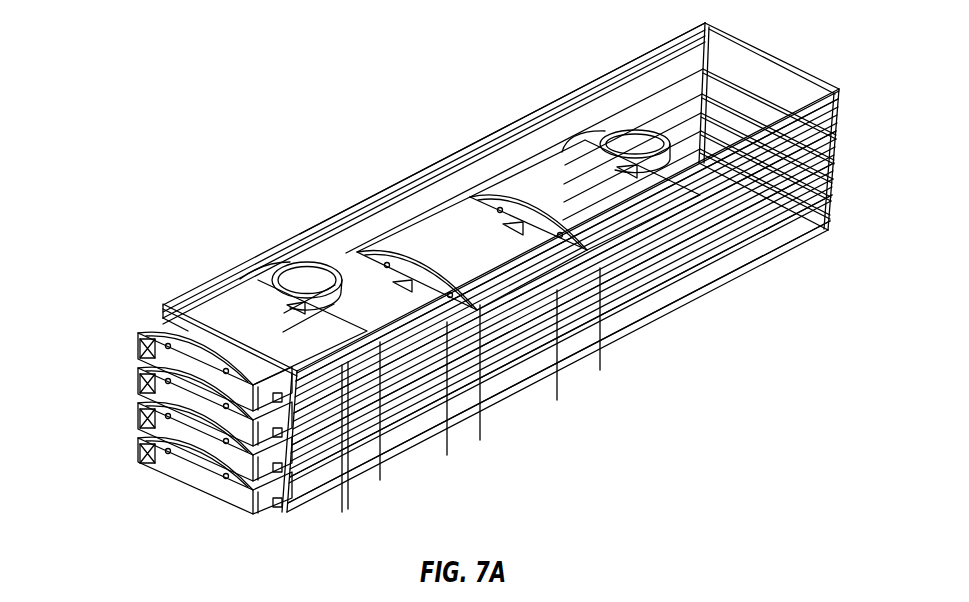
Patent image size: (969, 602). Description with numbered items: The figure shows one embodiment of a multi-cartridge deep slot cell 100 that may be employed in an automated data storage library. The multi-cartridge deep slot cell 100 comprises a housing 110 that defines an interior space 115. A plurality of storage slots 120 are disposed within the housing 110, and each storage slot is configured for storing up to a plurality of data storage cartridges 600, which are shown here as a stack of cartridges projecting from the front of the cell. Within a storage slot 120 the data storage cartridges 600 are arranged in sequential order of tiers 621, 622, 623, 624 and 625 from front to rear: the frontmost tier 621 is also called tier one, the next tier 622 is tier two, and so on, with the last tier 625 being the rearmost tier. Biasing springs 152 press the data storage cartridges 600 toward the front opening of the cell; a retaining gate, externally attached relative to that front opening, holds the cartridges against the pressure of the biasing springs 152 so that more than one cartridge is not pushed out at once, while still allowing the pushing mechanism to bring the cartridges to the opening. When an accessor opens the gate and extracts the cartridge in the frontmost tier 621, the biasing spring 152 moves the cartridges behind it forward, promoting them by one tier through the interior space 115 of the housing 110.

The multi-cartridge deep slot cell 100 is at (120, 221).
The housing 110 is at (437, 169).
The interior space 115 is at (125, 370).
The storage slots 120 is at (347, 192).
The biasing spring 152 is at (635, 128).
The data storage cartridges 600 is at (148, 332).
The tier 1 621 is at (323, 482).
The tier 2 622 is at (427, 427).
The tier 3 623 is at (527, 375).
The tier 4 624 is at (648, 313).
The rearmost tier 625 is at (752, 256).